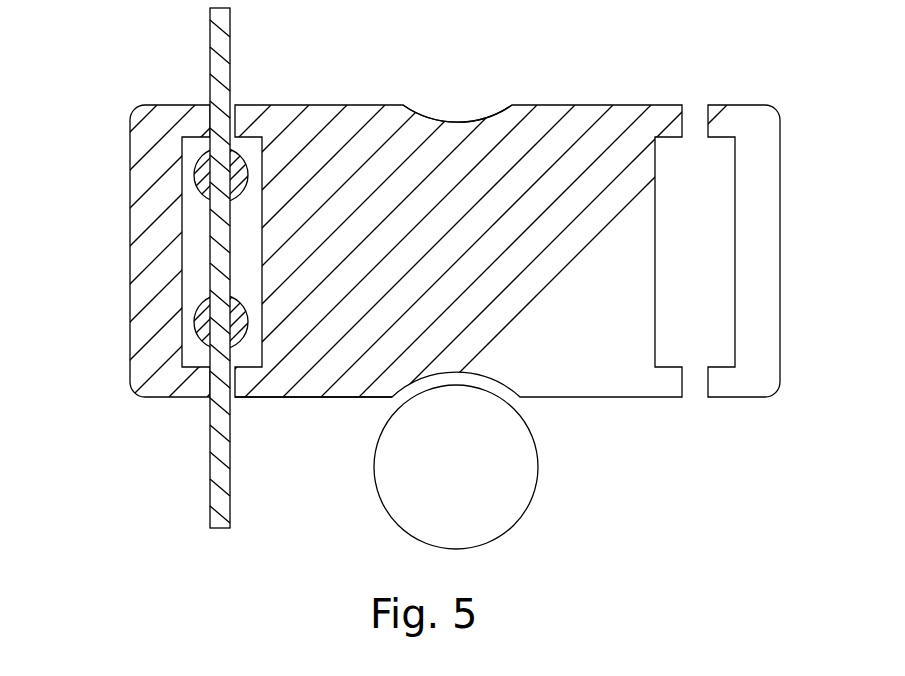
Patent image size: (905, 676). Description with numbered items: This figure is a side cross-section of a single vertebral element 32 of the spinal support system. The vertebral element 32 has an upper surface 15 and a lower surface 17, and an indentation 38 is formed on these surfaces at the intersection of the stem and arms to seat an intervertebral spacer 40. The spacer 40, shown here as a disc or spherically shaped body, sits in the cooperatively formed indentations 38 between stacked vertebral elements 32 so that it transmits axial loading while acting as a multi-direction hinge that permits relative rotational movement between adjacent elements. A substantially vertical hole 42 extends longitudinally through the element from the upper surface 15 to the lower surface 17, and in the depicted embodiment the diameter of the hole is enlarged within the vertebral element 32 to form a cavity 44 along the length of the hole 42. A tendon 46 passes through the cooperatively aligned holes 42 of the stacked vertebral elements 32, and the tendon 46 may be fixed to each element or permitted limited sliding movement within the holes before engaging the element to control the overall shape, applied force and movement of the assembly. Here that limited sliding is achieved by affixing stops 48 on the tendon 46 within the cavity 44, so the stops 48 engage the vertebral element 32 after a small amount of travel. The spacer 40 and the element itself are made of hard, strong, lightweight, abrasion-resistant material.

The vertebral element 32 is at (112, 72).
The upper surface 15 is at (331, 103).
The indentation 38 is at (455, 120).
The hole 42 is at (693, 118).
The stop 48 is at (193, 182).
The cavity 44 is at (194, 222).
The tendon 46 is at (210, 470).
The lower surface 17 is at (300, 400).
The intervertebral spacer 40 is at (540, 478).